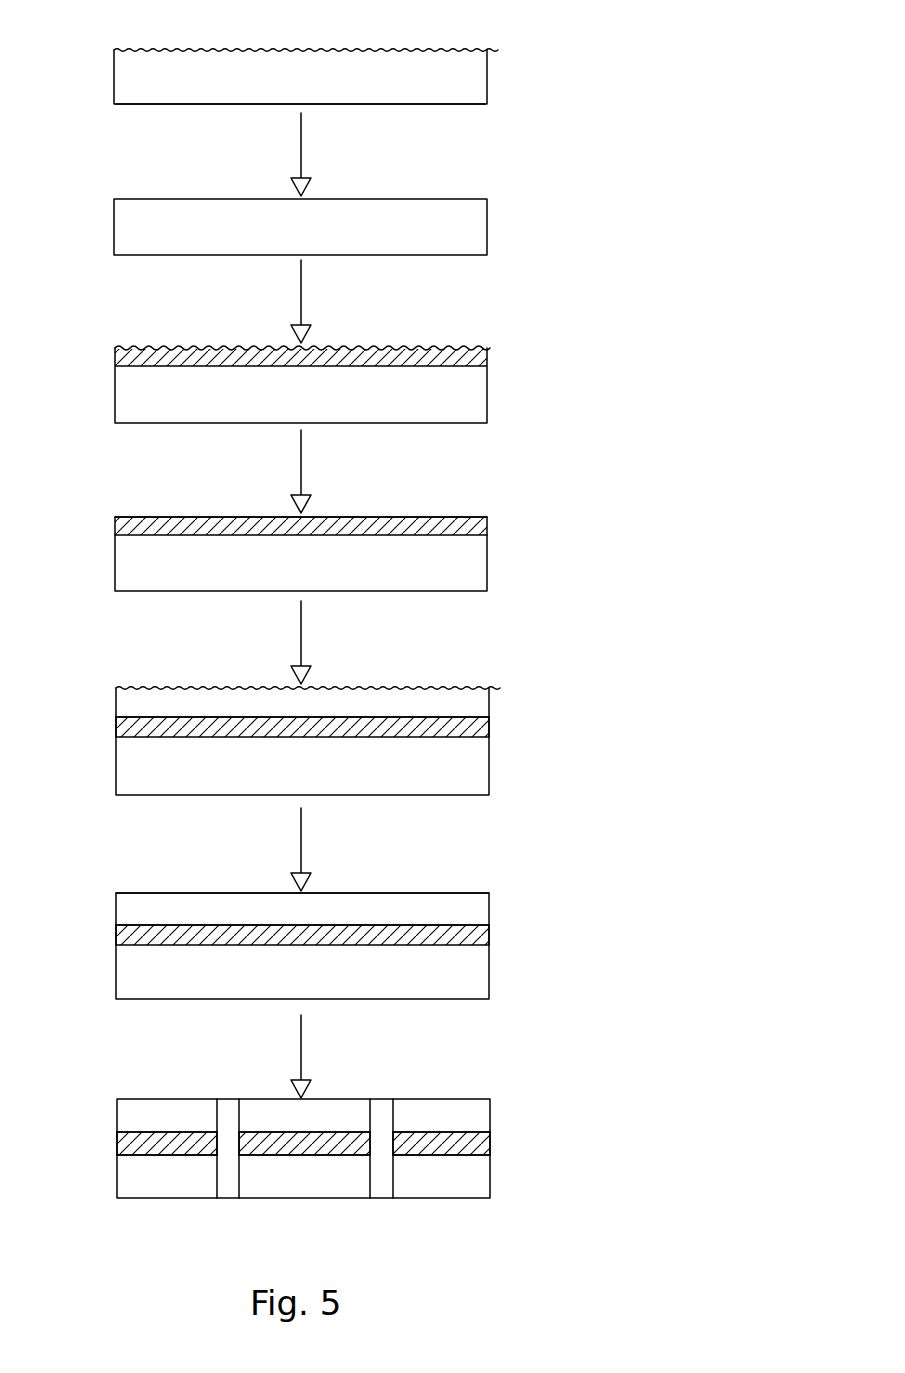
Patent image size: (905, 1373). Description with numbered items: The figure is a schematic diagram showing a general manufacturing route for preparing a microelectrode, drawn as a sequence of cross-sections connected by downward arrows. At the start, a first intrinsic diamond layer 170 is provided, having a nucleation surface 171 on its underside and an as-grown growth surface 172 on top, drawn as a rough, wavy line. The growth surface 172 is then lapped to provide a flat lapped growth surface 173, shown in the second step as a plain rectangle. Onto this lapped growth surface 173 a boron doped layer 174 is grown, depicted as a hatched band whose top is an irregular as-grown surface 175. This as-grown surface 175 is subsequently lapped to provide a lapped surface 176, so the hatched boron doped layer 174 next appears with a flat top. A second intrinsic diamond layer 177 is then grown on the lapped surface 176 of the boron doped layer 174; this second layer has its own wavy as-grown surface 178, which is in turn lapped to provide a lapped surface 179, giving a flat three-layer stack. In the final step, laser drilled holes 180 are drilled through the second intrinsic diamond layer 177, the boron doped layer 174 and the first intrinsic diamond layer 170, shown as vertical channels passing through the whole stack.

The first intrinsic diamond layer 170 is at (487, 82).
The nucleation surface 171 is at (418, 105).
The growth surface 172 is at (147, 50).
The lapped growth surface 173 is at (452, 199).
The boron doped layer 174 is at (487, 353).
The as-grown surface 175 is at (443, 345).
The lapped surface 176 is at (440, 516).
The second intrinsic diamond layer 177 is at (489, 698).
The as-grown surface 178 is at (428, 686).
The lapped surface 179 is at (432, 892).
The laser drilled holes 180 is at (383, 1108).